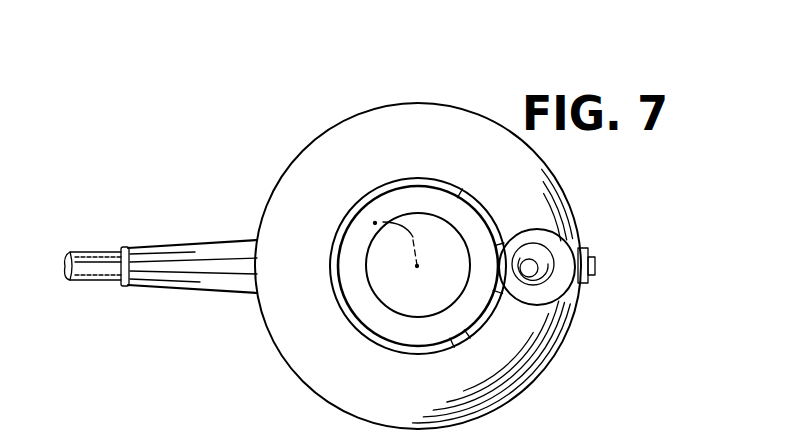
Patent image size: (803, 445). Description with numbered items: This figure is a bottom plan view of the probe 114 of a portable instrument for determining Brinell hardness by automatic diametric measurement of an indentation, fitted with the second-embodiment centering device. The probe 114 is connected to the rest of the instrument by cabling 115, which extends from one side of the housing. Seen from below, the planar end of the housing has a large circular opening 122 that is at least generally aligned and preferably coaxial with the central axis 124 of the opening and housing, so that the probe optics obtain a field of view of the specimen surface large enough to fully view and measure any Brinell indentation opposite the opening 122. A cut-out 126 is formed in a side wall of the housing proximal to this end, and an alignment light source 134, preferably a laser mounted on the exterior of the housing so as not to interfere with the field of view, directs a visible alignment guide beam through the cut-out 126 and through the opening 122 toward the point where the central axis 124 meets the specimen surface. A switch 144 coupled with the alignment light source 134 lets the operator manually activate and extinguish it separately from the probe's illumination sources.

The probe 114 is at (413, 103).
The cabling 115 is at (215, 252).
The opening 122 is at (380, 318).
The central axis 124 is at (372, 223).
The cut-out 126 is at (472, 337).
The alignment light source 134 is at (562, 242).
The switch 144 is at (590, 263).